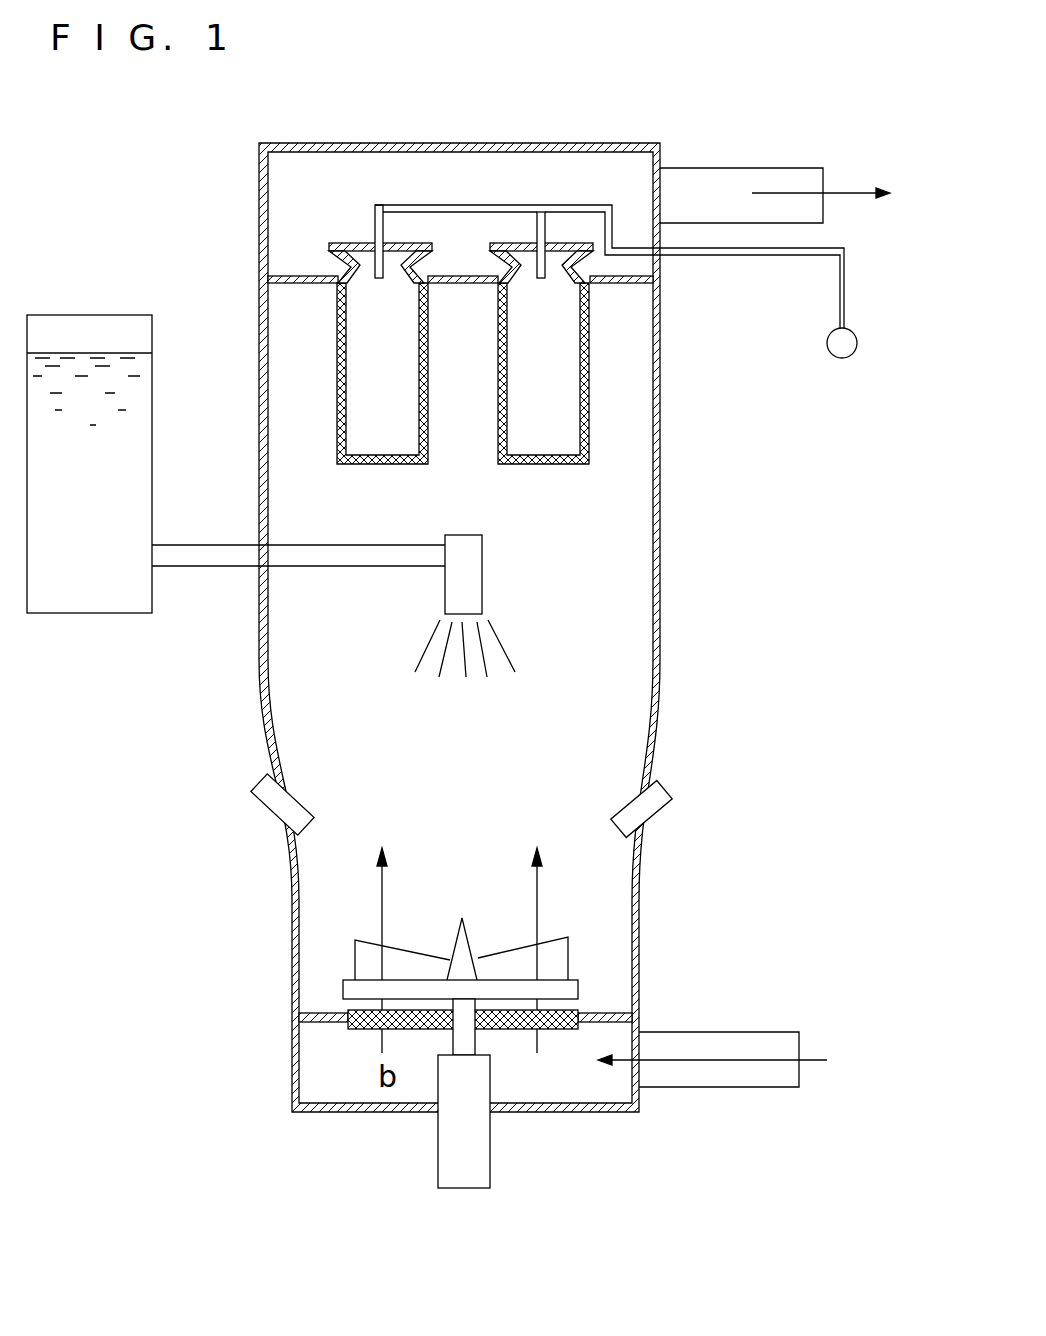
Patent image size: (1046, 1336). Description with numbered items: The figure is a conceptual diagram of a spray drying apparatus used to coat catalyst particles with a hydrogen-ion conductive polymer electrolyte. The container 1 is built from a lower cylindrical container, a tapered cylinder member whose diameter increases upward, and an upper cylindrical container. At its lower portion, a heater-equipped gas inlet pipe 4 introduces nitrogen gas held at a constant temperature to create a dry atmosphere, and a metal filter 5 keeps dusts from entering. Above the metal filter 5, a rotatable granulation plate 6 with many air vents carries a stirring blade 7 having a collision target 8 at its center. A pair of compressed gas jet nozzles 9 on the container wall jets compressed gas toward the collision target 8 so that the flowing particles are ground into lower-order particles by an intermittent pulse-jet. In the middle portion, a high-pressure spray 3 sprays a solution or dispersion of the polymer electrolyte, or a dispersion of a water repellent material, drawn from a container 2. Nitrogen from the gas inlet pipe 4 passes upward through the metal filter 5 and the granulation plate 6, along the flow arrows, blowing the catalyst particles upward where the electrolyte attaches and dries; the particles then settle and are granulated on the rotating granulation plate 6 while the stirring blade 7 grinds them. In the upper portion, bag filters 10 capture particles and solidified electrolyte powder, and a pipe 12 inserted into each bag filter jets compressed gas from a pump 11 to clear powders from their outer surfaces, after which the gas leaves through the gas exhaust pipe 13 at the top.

The container 1 is at (640, 905).
The container 2 is at (152, 590).
The high-pressure spray 3 is at (482, 596).
The gas inlet pipe 4 is at (736, 1035).
The metal filter 5 is at (348, 1014).
The granulation plate 6 is at (343, 990).
The stirring blade 7 is at (568, 960).
The collision target 8 is at (466, 924).
The compressed gas jet nozzles 9 is at (268, 800).
The bag filters 10 is at (337, 408).
The pump 11 is at (836, 347).
The pipe 12 is at (432, 205).
The gas exhaust pipe 13 is at (708, 168).